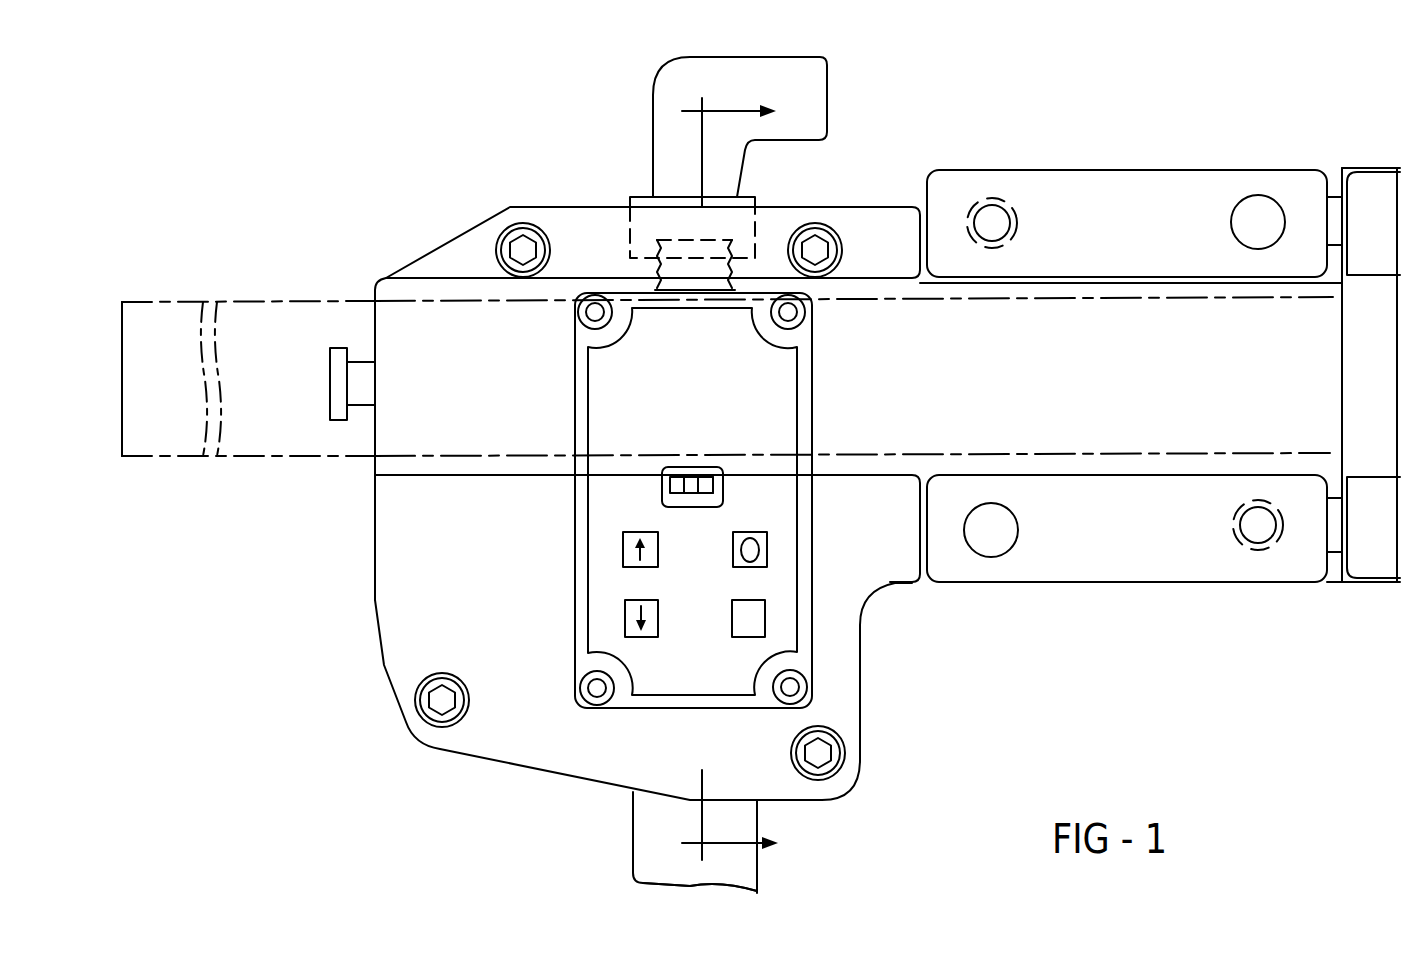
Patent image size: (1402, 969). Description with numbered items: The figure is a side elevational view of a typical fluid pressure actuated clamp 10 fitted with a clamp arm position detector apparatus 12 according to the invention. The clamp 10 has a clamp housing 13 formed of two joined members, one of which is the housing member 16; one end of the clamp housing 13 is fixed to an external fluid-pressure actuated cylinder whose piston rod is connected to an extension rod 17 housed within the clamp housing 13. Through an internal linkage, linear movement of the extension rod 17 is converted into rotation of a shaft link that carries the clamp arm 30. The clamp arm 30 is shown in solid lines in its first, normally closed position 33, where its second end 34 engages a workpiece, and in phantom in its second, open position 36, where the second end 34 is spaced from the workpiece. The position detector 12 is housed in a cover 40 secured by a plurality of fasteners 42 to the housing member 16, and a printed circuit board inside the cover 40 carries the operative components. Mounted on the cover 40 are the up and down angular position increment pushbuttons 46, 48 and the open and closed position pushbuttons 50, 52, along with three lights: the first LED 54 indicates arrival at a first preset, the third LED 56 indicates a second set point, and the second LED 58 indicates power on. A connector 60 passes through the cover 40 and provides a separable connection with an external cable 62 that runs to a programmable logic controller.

The fluid pressure actuated clamp 10 is at (1030, 46).
The clamp arm position detector apparatus 12 is at (640, 326).
The clamp housing 13 is at (1156, 190).
The housing member 16 is at (1085, 184).
The extension rod 17 is at (1200, 328).
The clamp arm 30 is at (645, 831).
The clamp arm first position 33 is at (740, 877).
The second end of clamp arm 34 is at (140, 452).
The clamp arm second position 36 is at (272, 325).
The cover 40 is at (607, 507).
The fasteners 42 is at (593, 697).
The up angular position increment pushbutton 46 is at (623, 557).
The down angular position increment pushbutton 48 is at (625, 617).
The open position pushbutton 50 is at (767, 552).
The closed position pushbutton 52 is at (765, 628).
The first LED 54 is at (673, 480).
The third LED 56 is at (718, 480).
The second LED 58 is at (692, 480).
The connector 60 is at (643, 219).
The external conductor or cable 62 is at (815, 128).